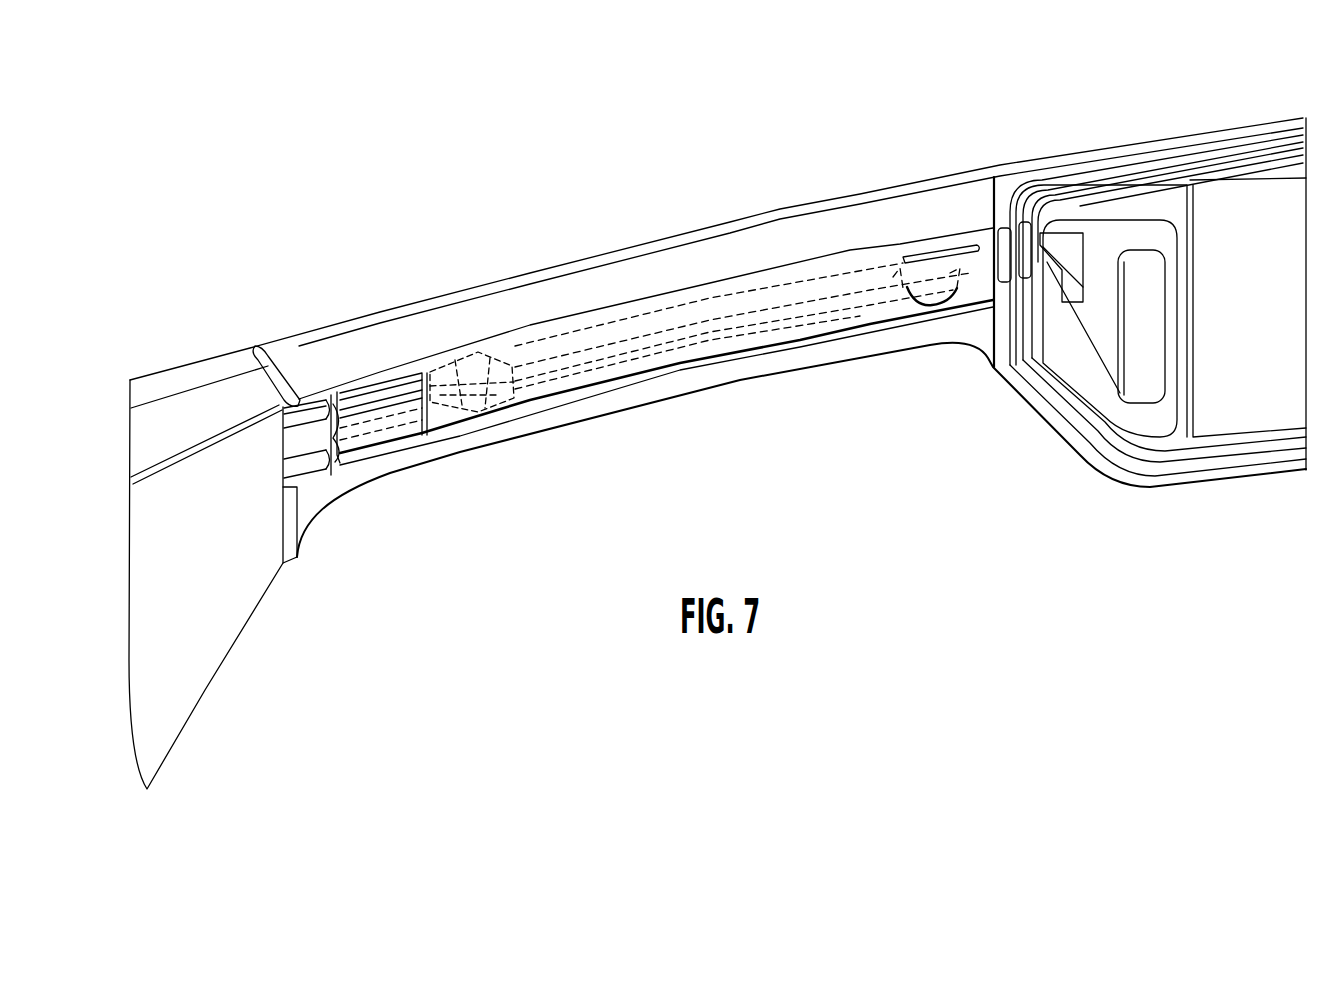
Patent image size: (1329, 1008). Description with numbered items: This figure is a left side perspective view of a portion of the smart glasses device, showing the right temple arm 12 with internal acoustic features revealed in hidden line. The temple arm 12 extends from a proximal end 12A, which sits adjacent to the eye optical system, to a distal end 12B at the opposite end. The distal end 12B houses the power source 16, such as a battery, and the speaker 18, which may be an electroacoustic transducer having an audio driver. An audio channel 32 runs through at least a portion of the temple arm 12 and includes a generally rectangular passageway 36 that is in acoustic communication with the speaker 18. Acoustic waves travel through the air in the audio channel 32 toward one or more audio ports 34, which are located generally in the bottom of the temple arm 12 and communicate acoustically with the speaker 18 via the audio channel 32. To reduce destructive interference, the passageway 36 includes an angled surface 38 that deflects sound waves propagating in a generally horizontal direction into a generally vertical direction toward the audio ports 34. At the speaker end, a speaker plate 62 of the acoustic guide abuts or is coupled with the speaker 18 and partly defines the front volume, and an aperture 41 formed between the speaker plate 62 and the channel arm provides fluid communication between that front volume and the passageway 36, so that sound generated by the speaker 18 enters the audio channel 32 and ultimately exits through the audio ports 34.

The right temple arm 12 is at (940, 175).
The proximal end 12A is at (314, 565).
The distal end 12B is at (1158, 496).
The power source 16 is at (1255, 183).
The speaker 18 is at (1107, 217).
The audio channel 32 is at (720, 279).
The audio ports 34 is at (501, 400).
The passageway 36 is at (823, 288).
The angled surface 38 is at (490, 380).
The aperture 41 is at (1018, 215).
The speaker plate 62 is at (1147, 197).